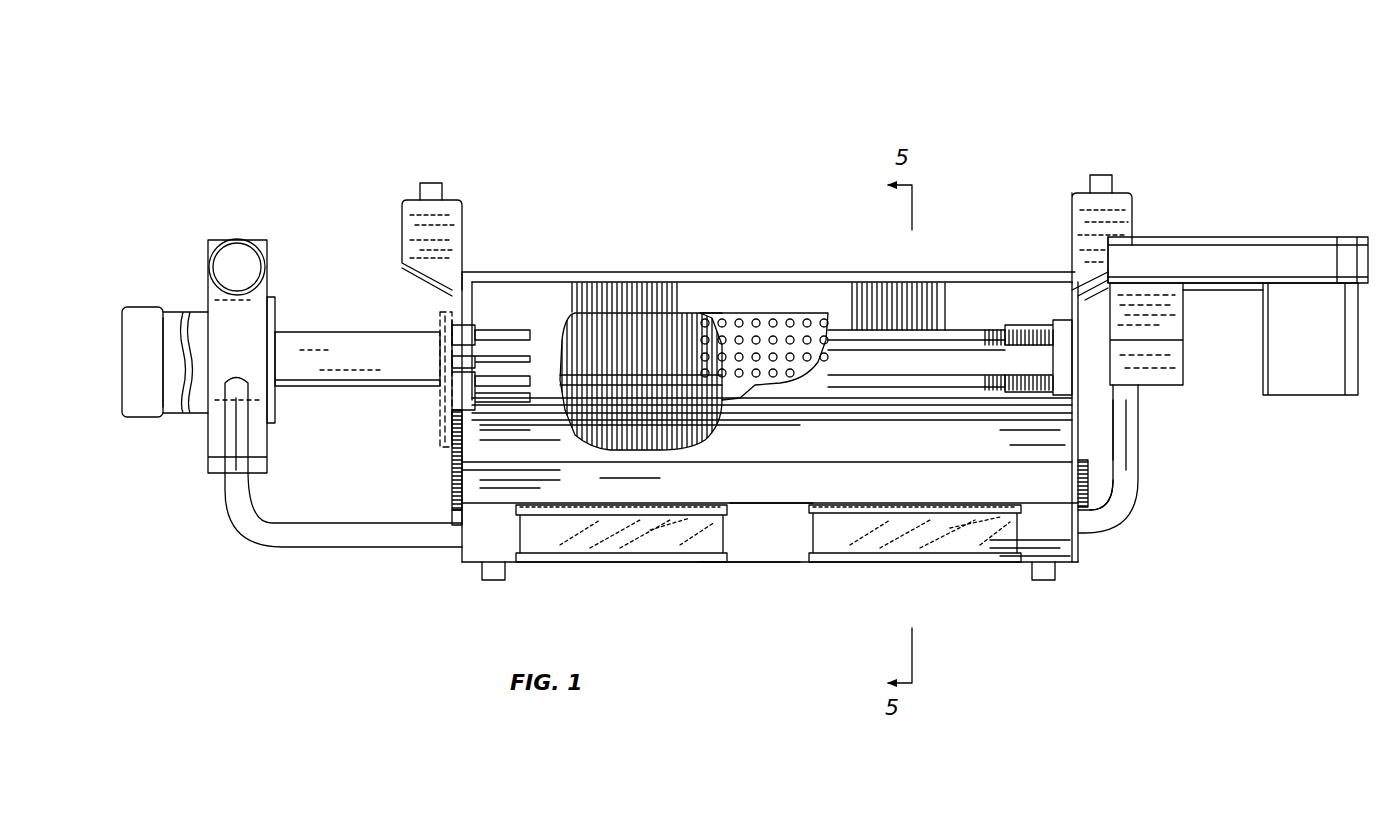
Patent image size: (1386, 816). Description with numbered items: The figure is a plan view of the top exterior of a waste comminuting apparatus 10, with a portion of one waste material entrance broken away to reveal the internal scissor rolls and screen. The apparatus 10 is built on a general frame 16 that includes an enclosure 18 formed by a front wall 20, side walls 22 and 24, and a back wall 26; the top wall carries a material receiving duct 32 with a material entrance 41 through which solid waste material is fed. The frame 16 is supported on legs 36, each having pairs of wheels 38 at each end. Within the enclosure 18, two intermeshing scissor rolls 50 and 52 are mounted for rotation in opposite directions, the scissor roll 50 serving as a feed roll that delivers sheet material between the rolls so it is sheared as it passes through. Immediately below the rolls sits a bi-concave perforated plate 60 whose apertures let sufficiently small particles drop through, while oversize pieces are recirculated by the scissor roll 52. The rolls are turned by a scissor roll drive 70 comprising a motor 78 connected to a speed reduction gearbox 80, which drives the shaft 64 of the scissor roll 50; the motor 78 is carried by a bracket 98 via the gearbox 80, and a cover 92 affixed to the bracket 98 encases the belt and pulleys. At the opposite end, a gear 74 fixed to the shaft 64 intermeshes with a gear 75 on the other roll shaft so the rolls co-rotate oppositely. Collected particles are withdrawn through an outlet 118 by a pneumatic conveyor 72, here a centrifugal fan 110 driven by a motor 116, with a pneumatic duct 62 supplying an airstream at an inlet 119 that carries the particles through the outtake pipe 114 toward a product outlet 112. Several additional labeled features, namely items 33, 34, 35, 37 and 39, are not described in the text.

The waste comminuting apparatus 10 is at (1152, 68).
The frame 16 is at (450, 498).
The enclosure 18 is at (866, 568).
The front wall 20 is at (457, 528).
The side wall 22 is at (452, 477).
The side wall 24 is at (1105, 500).
The back wall 26 is at (808, 290).
The material receiving duct 32 is at (798, 416).
The base support 33 is at (785, 534).
The first heating block 34 is at (613, 547).
The second heating block 35 is at (946, 540).
The legs 36 is at (462, 250).
The inner partition 37 is at (853, 403).
The wheels 38 is at (442, 190).
The bearing 39 is at (975, 330).
The material entrance 41 is at (953, 312).
The scissor roll 50 is at (705, 440).
The scissor roll 52 is at (690, 320).
The perforated plate 60 is at (765, 330).
The pneumatic duct 62 is at (310, 550).
The shaft 64 is at (1100, 290).
The scissor roll drive 70 is at (1238, 312).
The pneumatic conveyor 72 is at (186, 422).
The gear 74 is at (440, 337).
The gear 75 is at (440, 427).
The motor 78 is at (1318, 362).
The speed reduction gearbox 80 is at (1175, 364).
The cover 92 is at (1365, 237).
The bracket 98 is at (1238, 292).
The centrifugal fan 110 is at (270, 246).
The product outlet 112 is at (237, 262).
The outtake pipe 114 is at (387, 365).
The motor 116 is at (200, 305).
The outlet 118 is at (438, 397).
The inlet 119 is at (1115, 427).